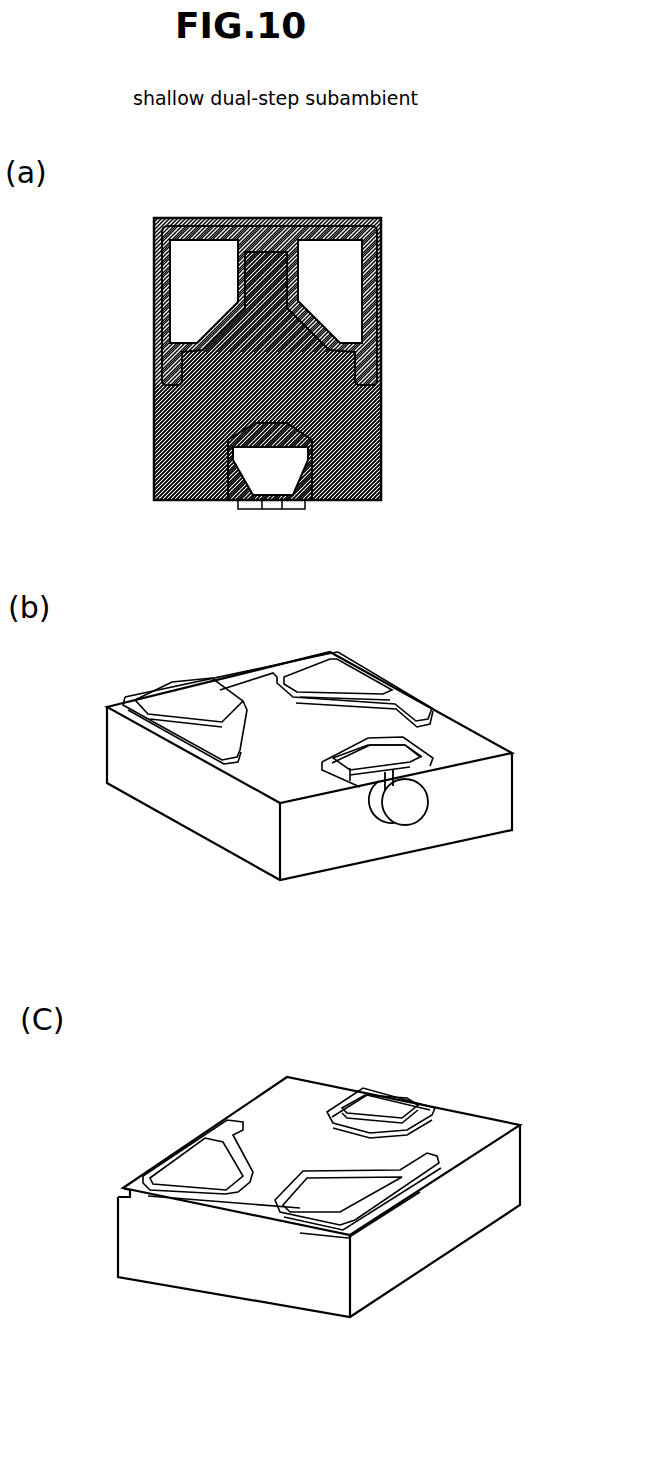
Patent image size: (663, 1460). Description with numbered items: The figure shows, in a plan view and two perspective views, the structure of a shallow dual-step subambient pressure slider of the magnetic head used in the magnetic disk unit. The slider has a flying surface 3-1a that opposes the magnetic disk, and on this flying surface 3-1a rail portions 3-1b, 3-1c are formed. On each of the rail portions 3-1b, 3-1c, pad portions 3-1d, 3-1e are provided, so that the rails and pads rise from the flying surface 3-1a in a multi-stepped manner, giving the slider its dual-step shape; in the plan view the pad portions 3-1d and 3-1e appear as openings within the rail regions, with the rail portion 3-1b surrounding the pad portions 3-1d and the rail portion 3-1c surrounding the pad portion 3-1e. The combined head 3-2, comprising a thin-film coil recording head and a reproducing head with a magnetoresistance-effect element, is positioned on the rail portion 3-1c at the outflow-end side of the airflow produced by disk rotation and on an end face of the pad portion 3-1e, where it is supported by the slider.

The flying surface 3-1a is at (320, 400).
The rail portion 3-1b is at (182, 372).
The rail portion 3-1c is at (305, 480).
The pad portion 3-1d is at (212, 257).
The pad portion 3-1e is at (250, 462).
The combined head 3-2 is at (293, 503).